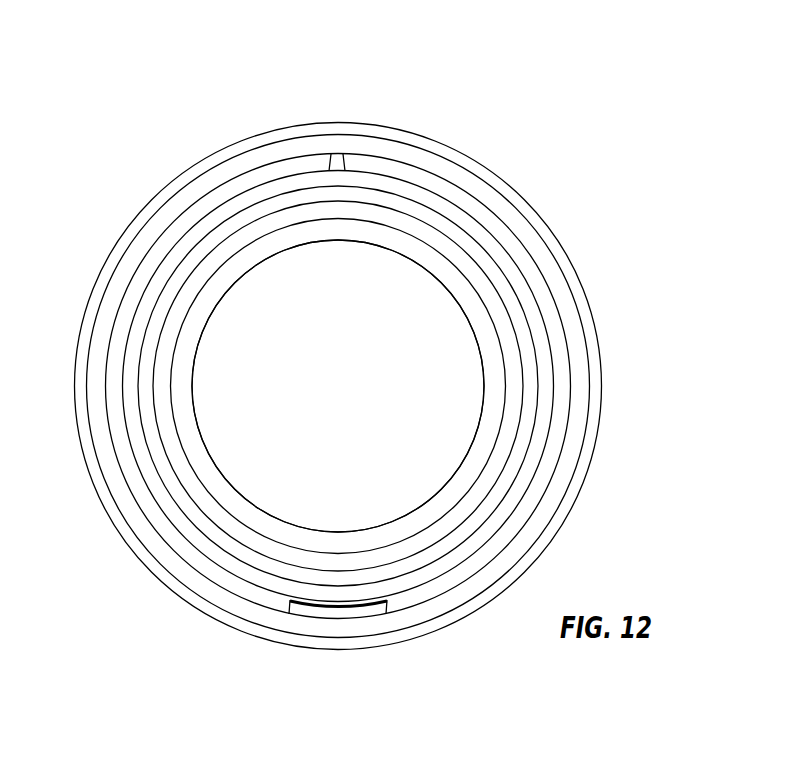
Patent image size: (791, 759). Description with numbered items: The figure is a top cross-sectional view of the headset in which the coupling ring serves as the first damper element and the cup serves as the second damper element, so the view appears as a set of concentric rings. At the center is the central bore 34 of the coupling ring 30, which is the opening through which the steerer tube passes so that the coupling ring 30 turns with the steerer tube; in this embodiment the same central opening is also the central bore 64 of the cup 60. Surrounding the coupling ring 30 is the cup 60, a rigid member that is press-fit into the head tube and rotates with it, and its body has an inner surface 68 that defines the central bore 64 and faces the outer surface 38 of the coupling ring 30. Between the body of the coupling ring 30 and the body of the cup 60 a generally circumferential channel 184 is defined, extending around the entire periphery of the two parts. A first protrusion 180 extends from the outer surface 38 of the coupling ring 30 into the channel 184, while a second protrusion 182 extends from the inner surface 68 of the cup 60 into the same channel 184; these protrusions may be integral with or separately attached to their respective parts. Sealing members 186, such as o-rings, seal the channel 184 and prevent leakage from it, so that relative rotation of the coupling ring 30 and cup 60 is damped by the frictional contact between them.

The coupling ring 30 is at (260, 182).
The central bore 34 is at (330, 400).
The outer surface 38 is at (445, 199).
The cup 60 is at (457, 146).
The central bore 64 is at (363, 400).
The inner surface 68 is at (385, 158).
The first protrusion 180 is at (327, 160).
The second protrusion 182 is at (364, 606).
The channel 184 is at (525, 258).
The sealing members 186 is at (495, 409).